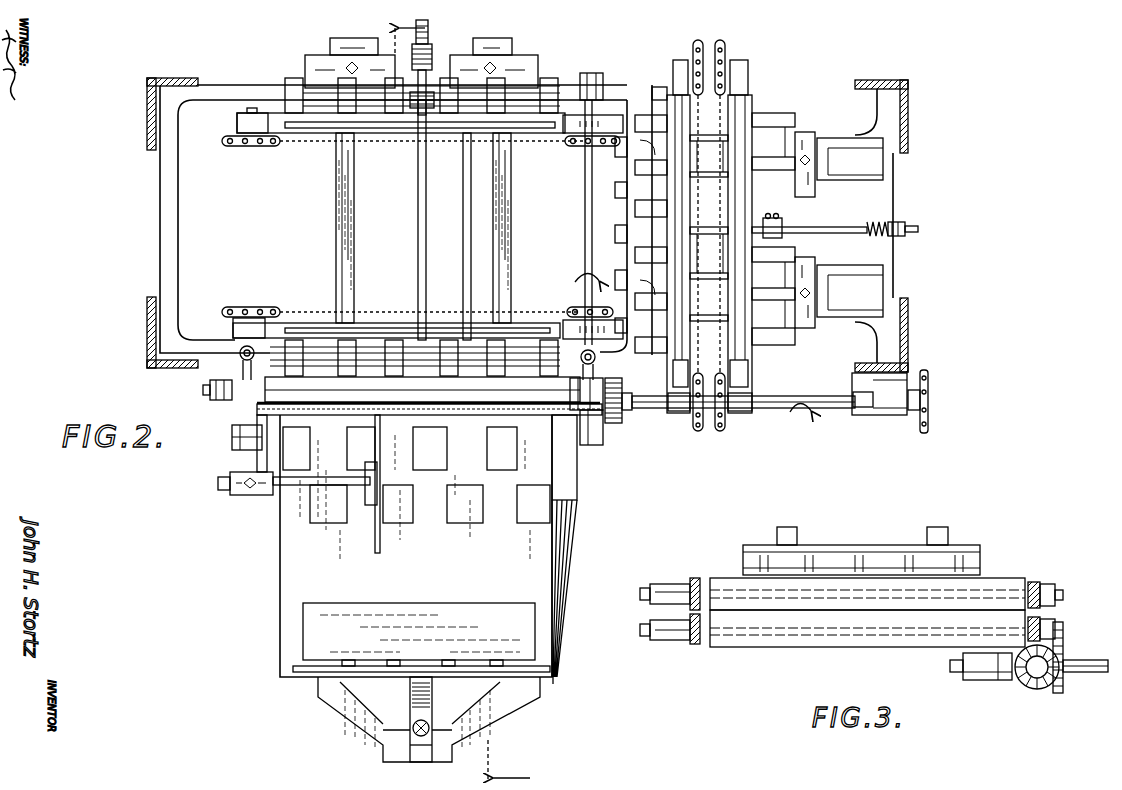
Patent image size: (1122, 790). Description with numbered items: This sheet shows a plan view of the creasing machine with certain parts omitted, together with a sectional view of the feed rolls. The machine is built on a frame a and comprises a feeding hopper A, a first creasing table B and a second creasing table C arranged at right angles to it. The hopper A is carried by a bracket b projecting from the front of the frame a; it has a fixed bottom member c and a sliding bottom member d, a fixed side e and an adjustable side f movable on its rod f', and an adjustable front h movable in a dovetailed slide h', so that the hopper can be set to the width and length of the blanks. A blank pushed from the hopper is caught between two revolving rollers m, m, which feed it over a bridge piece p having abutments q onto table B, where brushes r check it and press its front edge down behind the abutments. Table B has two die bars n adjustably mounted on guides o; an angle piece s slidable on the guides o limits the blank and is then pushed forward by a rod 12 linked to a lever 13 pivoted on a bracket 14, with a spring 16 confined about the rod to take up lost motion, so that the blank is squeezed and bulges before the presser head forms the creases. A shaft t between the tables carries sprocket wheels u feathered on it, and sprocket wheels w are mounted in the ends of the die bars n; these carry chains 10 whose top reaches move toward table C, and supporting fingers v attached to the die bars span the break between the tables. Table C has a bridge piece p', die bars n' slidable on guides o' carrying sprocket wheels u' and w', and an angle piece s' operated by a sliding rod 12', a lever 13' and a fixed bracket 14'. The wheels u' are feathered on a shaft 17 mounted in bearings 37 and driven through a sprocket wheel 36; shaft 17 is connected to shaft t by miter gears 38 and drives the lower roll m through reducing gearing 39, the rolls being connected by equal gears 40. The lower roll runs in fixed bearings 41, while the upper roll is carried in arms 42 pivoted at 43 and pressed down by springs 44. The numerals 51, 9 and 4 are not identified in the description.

In FIG. 2, the machine frame a is at (150, 322).
In FIG. 2, the die bars n is at (399, 225).
In FIG. 2, the sprocket wheels w is at (393, 223).
In FIG. 2, the guide blocks 51 is at (293, 82).
In FIG. 2, the angle piece s is at (560, 202).
In FIG. 2, the angle piece s' is at (806, 115).
In FIG. 2, the lever 13 is at (410, 27).
In FIG. 2, the spring 16 is at (414, 56).
In FIG. 2, the bracket 14 is at (406, 88).
In FIG. 2, the guides o is at (420, 228).
In FIG. 2, the rod 12 is at (409, 220).
In FIG. 2, the sprocket chains 10 is at (463, 160).
In FIG. 2, the shaft t is at (584, 240).
In FIG. 2, the sprocket wheels u is at (586, 226).
In FIG. 2, the supporting fingers v is at (608, 124).
In FIG. 2, the first creasing table B is at (392, 220).
In FIG. 2, the second creasing table C is at (708, 207).
In FIG. 2, the bridge piece p is at (525, 305).
In FIG. 2, the abutments q is at (420, 350).
In FIG. 2, the bridge piece p' is at (635, 234).
In FIG. 2, the die bars n' is at (710, 233).
In FIG. 2, the sprocket wheels w' is at (709, 55).
In FIG. 2, the sprocket wheels u' is at (709, 412).
In FIG. 2, the guides o' is at (850, 213).
In FIG. 2, the sliding rod 12' is at (809, 217).
In FIG. 2, the fixed bracket 14' is at (894, 213).
In FIG. 2, the lever 13' is at (921, 214).
In FIG. 2, the springs 44 is at (240, 350).
In FIG. 2, the feed rollers m is at (245, 420).
In FIG. 3, the feed rollers m is at (728, 578).
In FIG. 2, the equal gears 40 is at (205, 390).
In FIG. 3, the equal gears 40 is at (660, 624).
In FIG. 2, the arms 42 is at (258, 400).
In FIG. 3, the arms 42 is at (690, 582).
In FIG. 2, the pivot 43 is at (250, 430).
In FIG. 2, the reducing gearing 39 is at (624, 416).
In FIG. 3, the reducing gearing 39 is at (1063, 690).
In FIG. 2, the shaft 17 is at (770, 410).
In FIG. 3, the shaft 17 is at (1093, 660).
In FIG. 2, the bearings 37 is at (890, 416).
In FIG. 3, the bearings 37 is at (985, 682).
In FIG. 2, the sprocket wheel 36 is at (928, 430).
In FIG. 2, the top bar 9 is at (462, 416).
In FIG. 2, the rod f' is at (297, 479).
In FIG. 2, the adjustable side f is at (355, 492).
In FIG. 2, the feeding hopper A is at (416, 546).
In FIG. 2, the fixed bottom member c is at (532, 467).
In FIG. 2, the sliding bottom member d is at (527, 547).
In FIG. 2, the fixed side e is at (555, 625).
In FIG. 2, the adjustable front h is at (423, 694).
In FIG. 2, the bracket b is at (320, 697).
In FIG. 2, the dovetailed slide h' is at (388, 721).
In FIG. 2, the section line 4 is at (472, 403).
In FIG. 3, the fixed bearings 41 is at (690, 648).
In FIG. 3, the brushes r is at (855, 568).
In FIG. 3, the miter gears 38 is at (1033, 690).